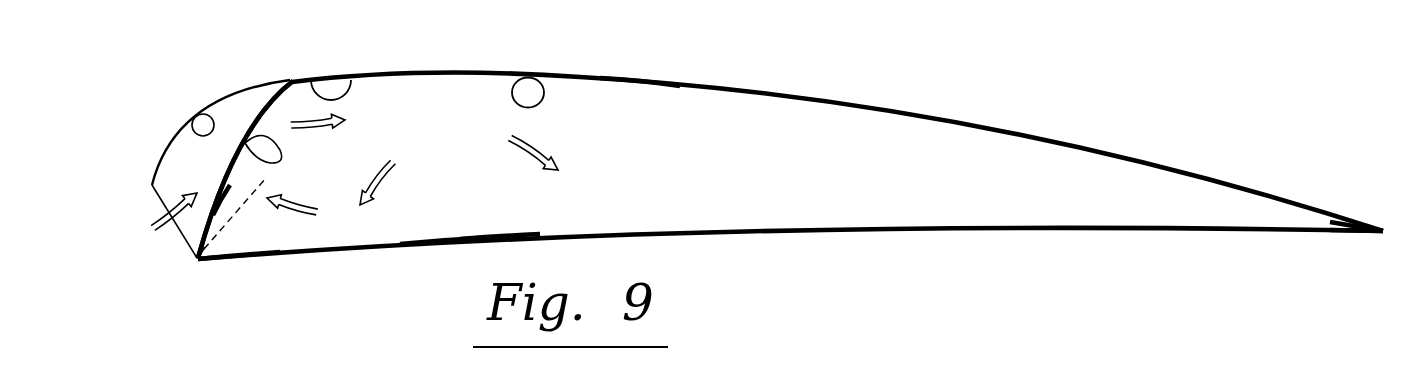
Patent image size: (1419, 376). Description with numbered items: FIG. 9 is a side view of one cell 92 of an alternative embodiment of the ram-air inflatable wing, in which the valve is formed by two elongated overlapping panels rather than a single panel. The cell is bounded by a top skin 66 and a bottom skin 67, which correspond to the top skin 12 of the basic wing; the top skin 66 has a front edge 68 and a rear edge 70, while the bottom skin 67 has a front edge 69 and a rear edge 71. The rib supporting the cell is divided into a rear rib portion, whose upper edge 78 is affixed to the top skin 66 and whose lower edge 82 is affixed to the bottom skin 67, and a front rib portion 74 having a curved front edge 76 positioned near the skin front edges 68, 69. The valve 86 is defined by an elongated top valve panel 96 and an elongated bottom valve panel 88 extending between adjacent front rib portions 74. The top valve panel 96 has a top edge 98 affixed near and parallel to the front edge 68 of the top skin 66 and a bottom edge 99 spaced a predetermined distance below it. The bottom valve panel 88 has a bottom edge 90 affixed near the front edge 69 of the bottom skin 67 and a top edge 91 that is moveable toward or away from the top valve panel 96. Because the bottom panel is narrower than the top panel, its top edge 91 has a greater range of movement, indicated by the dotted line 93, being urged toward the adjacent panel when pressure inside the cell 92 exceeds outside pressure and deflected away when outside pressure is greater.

The top skin 12 is at (798, 92).
The top skin 66 is at (618, 77).
The bottom skin 67 is at (437, 245).
The front edge of top skin 68 is at (152, 173).
The front edge of bottom skin 69 is at (202, 258).
The rear edge of top skin 70 is at (1345, 223).
The rear edge of bottom skin 71 is at (1340, 233).
The front rib portion 74 is at (170, 175).
The front edge of front rib portion 76 is at (192, 122).
The upper edge of rear rib portion 78 is at (517, 78).
The lower edge of rear rib portion 82 is at (477, 238).
The valve 86 is at (228, 153).
The bottom valve panel 88 is at (222, 213).
The bottom edge of bottom valve panel 90 is at (193, 248).
The top edge of bottom valve panel 91 is at (280, 163).
The cell 92 is at (567, 38).
The dotted line 93 is at (266, 178).
The top valve panel 96 is at (270, 100).
The top edge of top valve panel 98 is at (350, 78).
The bottom edge of top valve panel 99 is at (245, 143).